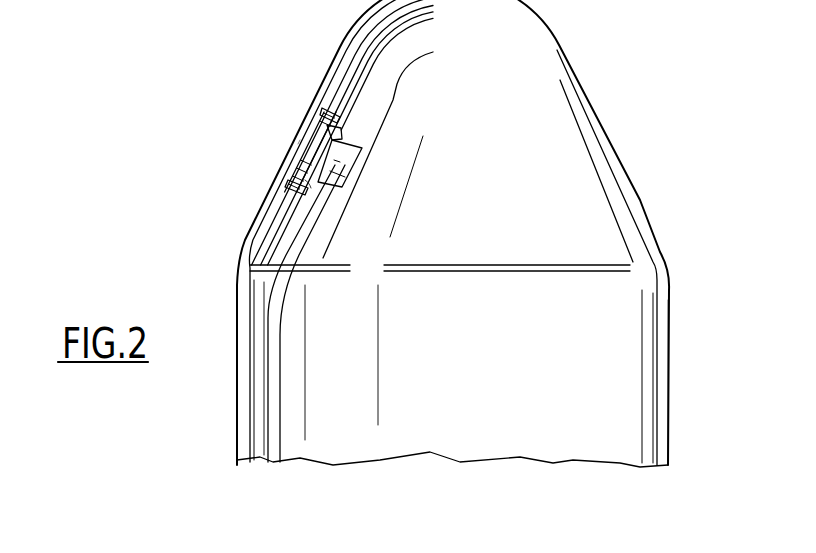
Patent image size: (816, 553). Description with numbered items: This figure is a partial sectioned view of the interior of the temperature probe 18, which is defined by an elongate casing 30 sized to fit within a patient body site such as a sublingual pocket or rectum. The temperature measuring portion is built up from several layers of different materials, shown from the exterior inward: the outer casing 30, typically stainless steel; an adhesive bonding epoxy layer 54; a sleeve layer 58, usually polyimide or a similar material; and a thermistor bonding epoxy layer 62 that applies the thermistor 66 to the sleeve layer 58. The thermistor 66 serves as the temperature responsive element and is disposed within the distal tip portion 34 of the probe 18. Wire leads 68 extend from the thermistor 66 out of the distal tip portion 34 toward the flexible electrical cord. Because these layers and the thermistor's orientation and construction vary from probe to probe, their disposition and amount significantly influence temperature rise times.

The temperature probe 18 is at (703, 62).
The elongate casing 30 is at (298, 144).
The distal tip portion 34 is at (673, 388).
The adhesive bonding epoxy layer 54 is at (300, 187).
The sleeve layer 58 is at (311, 188).
The thermistor bonding epoxy layer 62 is at (342, 134).
The thermistor 66 is at (363, 150).
The wire leads 68 is at (267, 340).